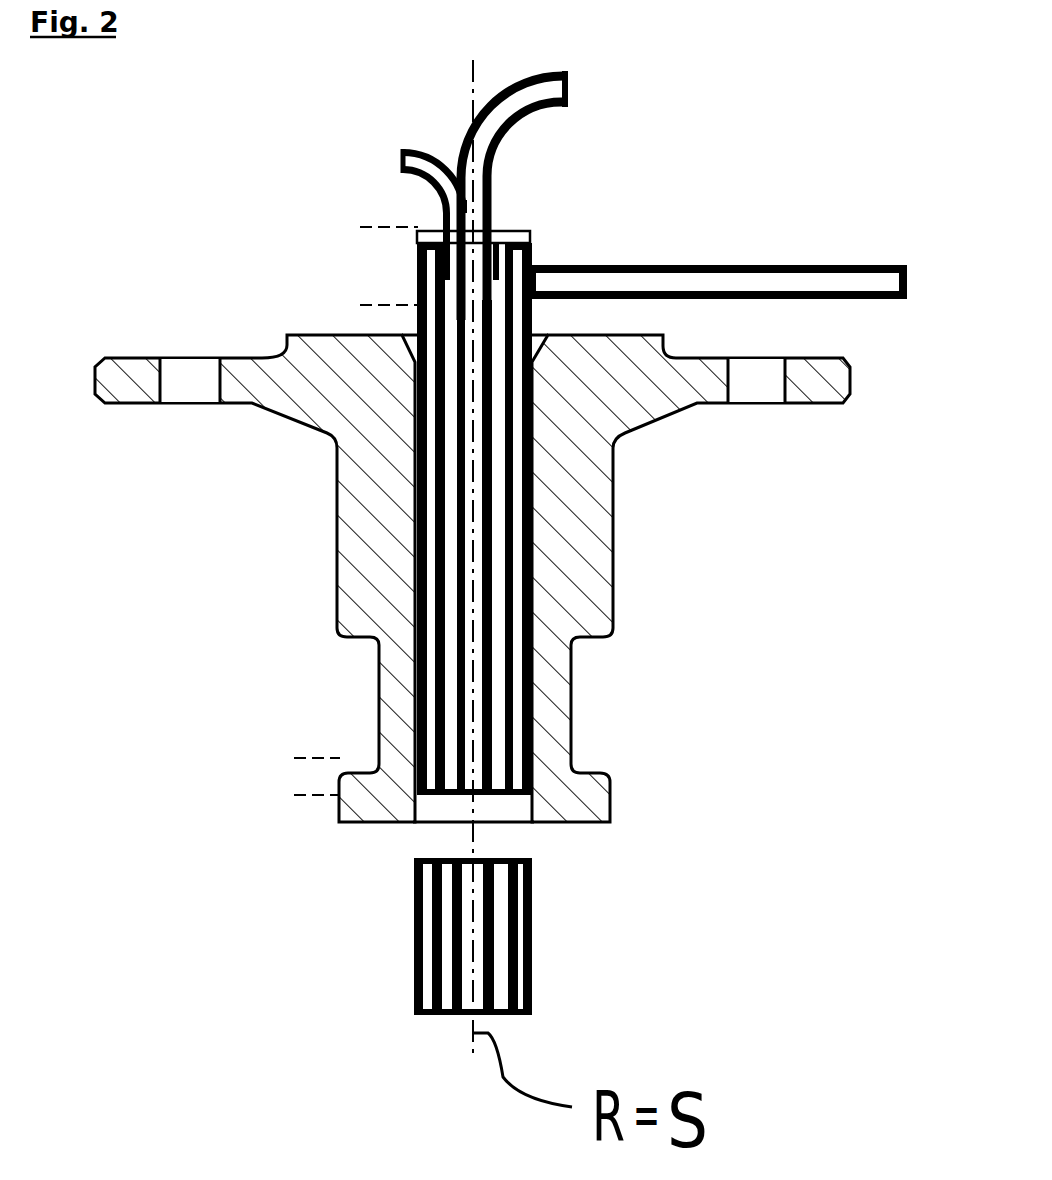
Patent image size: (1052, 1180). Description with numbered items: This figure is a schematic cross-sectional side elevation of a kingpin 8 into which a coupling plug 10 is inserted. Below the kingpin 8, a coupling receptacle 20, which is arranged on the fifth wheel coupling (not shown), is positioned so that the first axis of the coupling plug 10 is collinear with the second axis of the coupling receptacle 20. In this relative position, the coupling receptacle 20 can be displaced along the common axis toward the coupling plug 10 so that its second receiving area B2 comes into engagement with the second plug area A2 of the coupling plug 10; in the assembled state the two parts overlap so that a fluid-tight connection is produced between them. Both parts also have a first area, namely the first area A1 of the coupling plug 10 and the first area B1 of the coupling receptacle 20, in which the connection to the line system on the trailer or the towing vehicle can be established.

The kingpin 8 is at (622, 540).
The coupling plug 10 is at (560, 251).
The coupling receptacle 20 is at (585, 963).
The first area of the coupling plug A1 is at (360, 307).
The second plug area A2 is at (294, 797).
The first area of the coupling receptacle B1 is at (437, 1016).
The second receiving area B2 is at (418, 851).